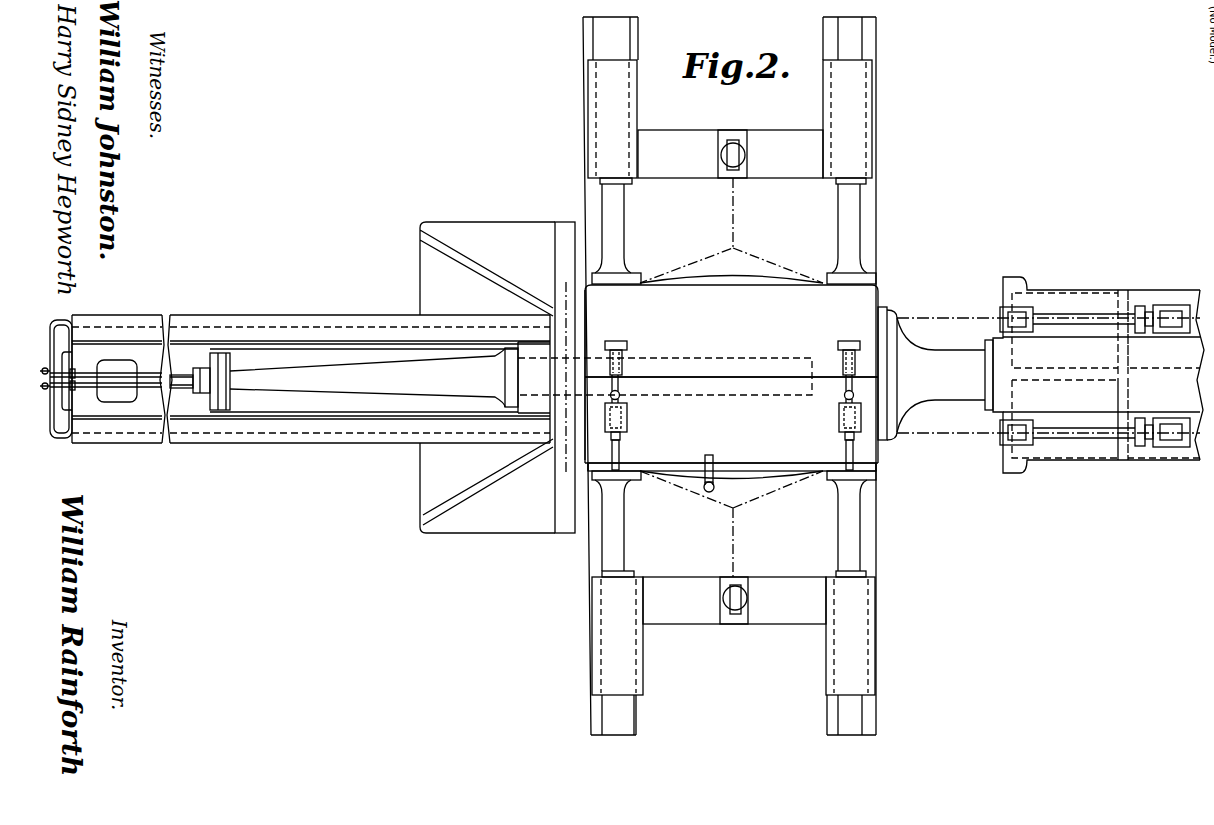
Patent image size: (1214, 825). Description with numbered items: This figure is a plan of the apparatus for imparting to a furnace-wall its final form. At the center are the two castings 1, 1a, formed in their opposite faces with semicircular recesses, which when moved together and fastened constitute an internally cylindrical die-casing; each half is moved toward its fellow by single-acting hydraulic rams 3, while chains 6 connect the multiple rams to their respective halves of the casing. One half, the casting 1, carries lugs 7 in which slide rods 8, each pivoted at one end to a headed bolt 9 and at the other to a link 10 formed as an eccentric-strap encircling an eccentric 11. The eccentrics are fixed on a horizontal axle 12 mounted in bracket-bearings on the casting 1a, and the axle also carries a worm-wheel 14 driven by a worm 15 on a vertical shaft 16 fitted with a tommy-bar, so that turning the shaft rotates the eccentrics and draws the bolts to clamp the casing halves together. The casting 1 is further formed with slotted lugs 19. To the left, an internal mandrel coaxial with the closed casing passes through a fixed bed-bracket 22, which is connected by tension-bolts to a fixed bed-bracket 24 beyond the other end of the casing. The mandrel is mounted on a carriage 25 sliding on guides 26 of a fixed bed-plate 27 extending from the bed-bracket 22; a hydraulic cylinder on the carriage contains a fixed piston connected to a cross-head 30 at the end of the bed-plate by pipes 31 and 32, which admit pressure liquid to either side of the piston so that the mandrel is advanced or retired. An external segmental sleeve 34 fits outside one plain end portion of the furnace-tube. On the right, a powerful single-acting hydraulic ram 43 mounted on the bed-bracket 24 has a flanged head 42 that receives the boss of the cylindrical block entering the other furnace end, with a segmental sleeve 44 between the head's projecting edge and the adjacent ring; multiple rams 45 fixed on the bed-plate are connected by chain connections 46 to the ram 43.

The casting (half of die-casing) 1 is at (731, 374).
The casting (half of die-casing) 1a is at (731, 420).
The single-acting hydraulic rams 3 is at (732, 376).
The chains 6 is at (734, 213).
The lugs 7 is at (627, 418).
The rods 8 is at (621, 437).
The headed bolt 9 is at (620, 390).
The link 10 is at (620, 458).
The eccentric 11 is at (608, 465).
The horizontal axle 12 is at (763, 468).
The worm-wheel 14 is at (713, 465).
The worm 15 is at (707, 494).
The vertical shaft 16 is at (714, 487).
The lugs 19 is at (627, 344).
The fixed bed-bracket 22 is at (497, 377).
The fixed bed-bracket 24 is at (1180, 452).
The carriage 25 is at (344, 379).
The guides 26 is at (186, 345).
The fixed bed-plate 27 is at (150, 310).
The cross-head 30 is at (56, 320).
The pipe 31 is at (133, 400).
The pipe 32 is at (118, 373).
The external segmental sleeve 34 is at (585, 318).
The flanged head 42 is at (897, 366).
The single-acting hydraulic ram 43 is at (964, 375).
The segmental sleeve 44 is at (883, 311).
The multiple rams 45 is at (1140, 310).
The chain connections 46 is at (947, 318).